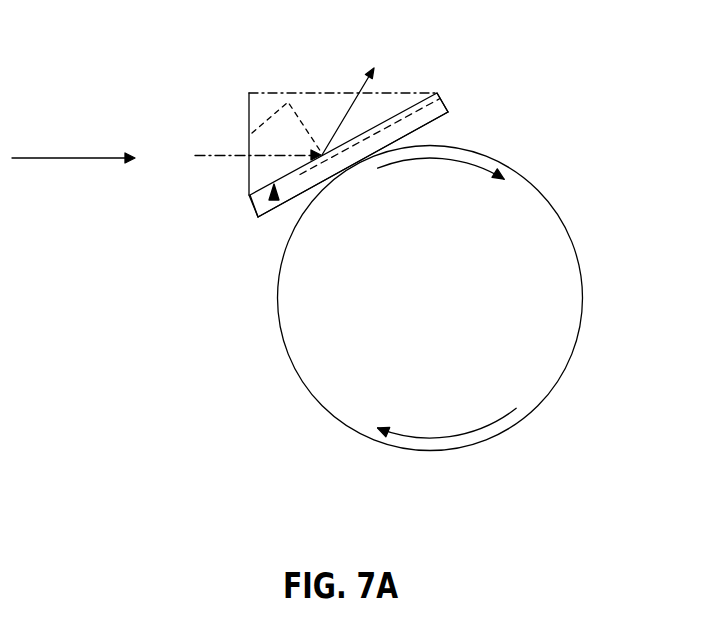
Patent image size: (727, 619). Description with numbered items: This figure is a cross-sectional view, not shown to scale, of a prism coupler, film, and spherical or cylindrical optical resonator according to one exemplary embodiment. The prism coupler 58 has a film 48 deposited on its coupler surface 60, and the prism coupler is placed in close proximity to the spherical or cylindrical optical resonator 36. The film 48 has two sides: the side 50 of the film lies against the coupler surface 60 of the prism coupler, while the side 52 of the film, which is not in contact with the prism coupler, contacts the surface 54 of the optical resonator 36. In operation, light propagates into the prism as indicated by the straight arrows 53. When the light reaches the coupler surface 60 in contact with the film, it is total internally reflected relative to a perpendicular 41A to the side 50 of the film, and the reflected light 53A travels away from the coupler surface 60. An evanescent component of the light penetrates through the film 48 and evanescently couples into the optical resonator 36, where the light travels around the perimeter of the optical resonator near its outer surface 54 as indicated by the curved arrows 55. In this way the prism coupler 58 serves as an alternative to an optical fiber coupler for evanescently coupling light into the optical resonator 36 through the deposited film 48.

The optical resonator 36 is at (583, 295).
The perpendicular 41A is at (244, 136).
The film 48 is at (446, 100).
The side of the film 50 is at (266, 213).
The side of the film 52 is at (421, 120).
The straight arrows 53 is at (62, 158).
The light 53A is at (356, 84).
The surface of the optical resonator 54 is at (368, 157).
The curved arrows 55 is at (470, 166).
The prism coupler 58 is at (263, 92).
The coupler surface 60 is at (382, 121).